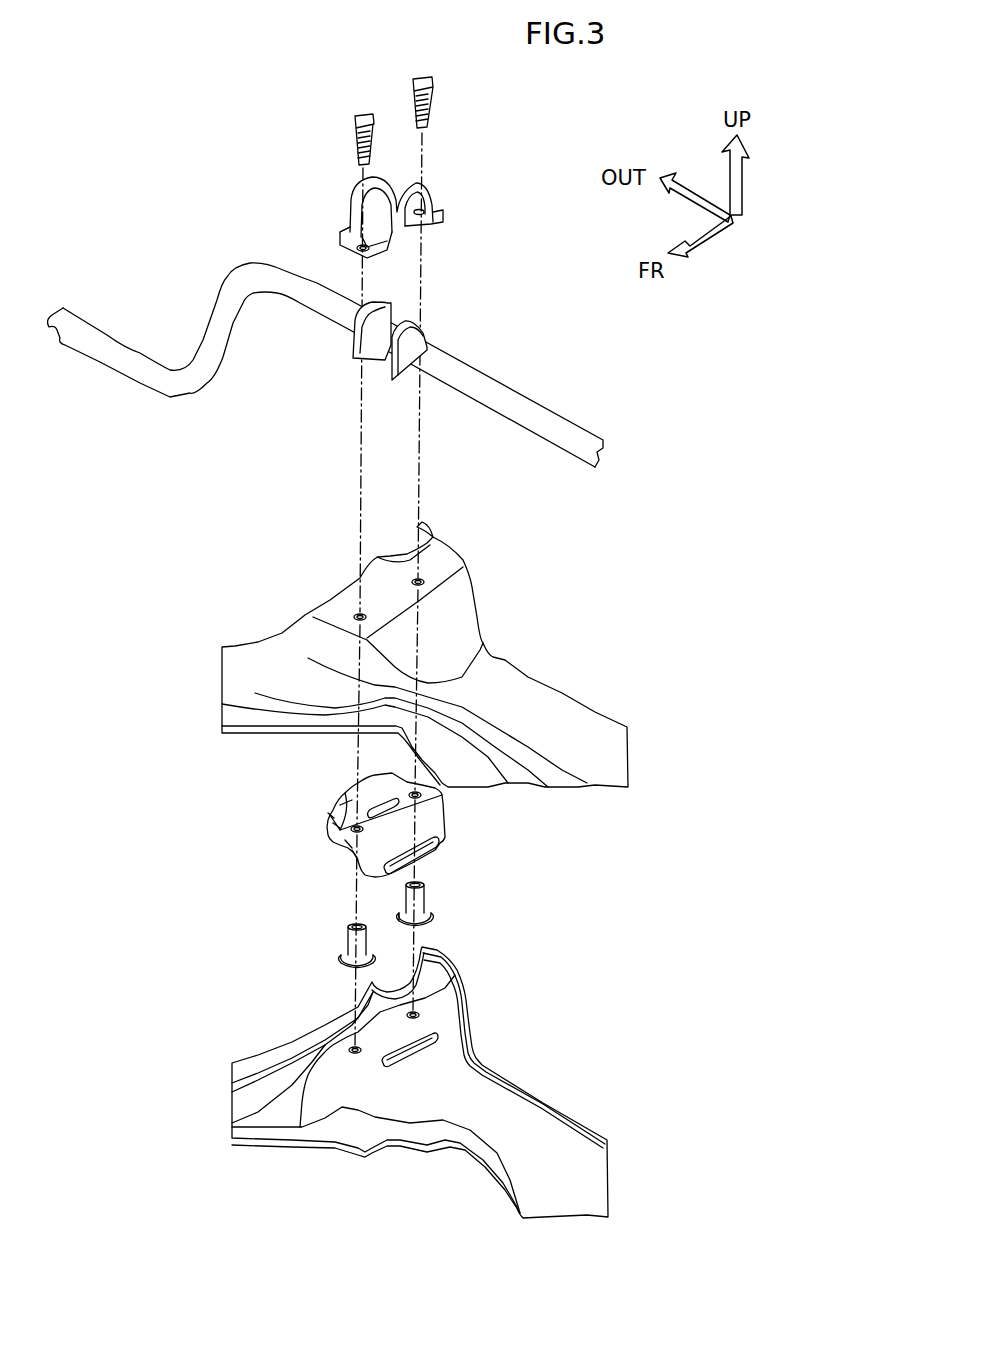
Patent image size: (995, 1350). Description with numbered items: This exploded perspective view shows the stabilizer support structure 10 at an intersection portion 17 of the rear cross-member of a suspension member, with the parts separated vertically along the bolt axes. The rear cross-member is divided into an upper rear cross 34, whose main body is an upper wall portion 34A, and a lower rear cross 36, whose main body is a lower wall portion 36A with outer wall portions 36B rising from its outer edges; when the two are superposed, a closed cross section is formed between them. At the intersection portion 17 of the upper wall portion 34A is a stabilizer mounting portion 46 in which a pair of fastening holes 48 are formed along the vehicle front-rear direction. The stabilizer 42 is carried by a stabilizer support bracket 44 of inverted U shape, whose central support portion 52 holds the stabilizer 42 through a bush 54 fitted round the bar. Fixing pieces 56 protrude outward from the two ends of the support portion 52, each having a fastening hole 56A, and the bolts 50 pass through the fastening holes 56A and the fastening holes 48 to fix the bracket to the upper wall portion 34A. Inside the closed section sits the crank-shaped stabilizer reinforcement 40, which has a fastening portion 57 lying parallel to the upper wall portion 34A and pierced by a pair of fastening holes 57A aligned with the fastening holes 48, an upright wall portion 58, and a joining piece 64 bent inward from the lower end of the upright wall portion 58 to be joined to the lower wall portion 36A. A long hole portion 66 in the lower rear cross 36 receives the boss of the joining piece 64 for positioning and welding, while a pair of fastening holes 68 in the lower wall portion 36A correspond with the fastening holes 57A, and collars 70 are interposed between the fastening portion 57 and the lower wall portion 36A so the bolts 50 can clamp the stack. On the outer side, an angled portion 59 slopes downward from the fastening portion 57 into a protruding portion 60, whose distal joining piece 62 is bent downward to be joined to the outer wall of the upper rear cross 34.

The stabilizer support structure 10 is at (612, 486).
The intersection portion 17 is at (461, 603).
The upper rear cross 34 is at (523, 648).
The upper wall portion 34A is at (545, 702).
The lower rear cross 36 is at (540, 1083).
The lower wall portion 36A is at (535, 1127).
The outer wall portion 36B is at (475, 990).
The stabilizer reinforcement 40 is at (457, 823).
The stabilizer 42 is at (510, 388).
The stabilizer support bracket 44 is at (458, 192).
The stabilizer mounting portion 46 is at (468, 541).
The fastening holes 48 is at (422, 582).
The bolts 50 is at (366, 113).
The support portion 52 is at (403, 230).
The bush 54 is at (392, 320).
The fixing pieces 56 is at (348, 232).
The fastening hole 56A is at (345, 250).
The fastening portion 57 is at (350, 841).
The fastening holes 57A is at (412, 788).
The upright wall portion 58 is at (355, 856).
The angled portion 59 is at (338, 824).
The protruding portion 60 is at (345, 810).
The joining piece 62 is at (330, 815).
The joining piece 64 is at (447, 840).
The long hole portion 66 is at (440, 1043).
The fastening holes 68 is at (412, 1011).
The collars 70 is at (420, 900).